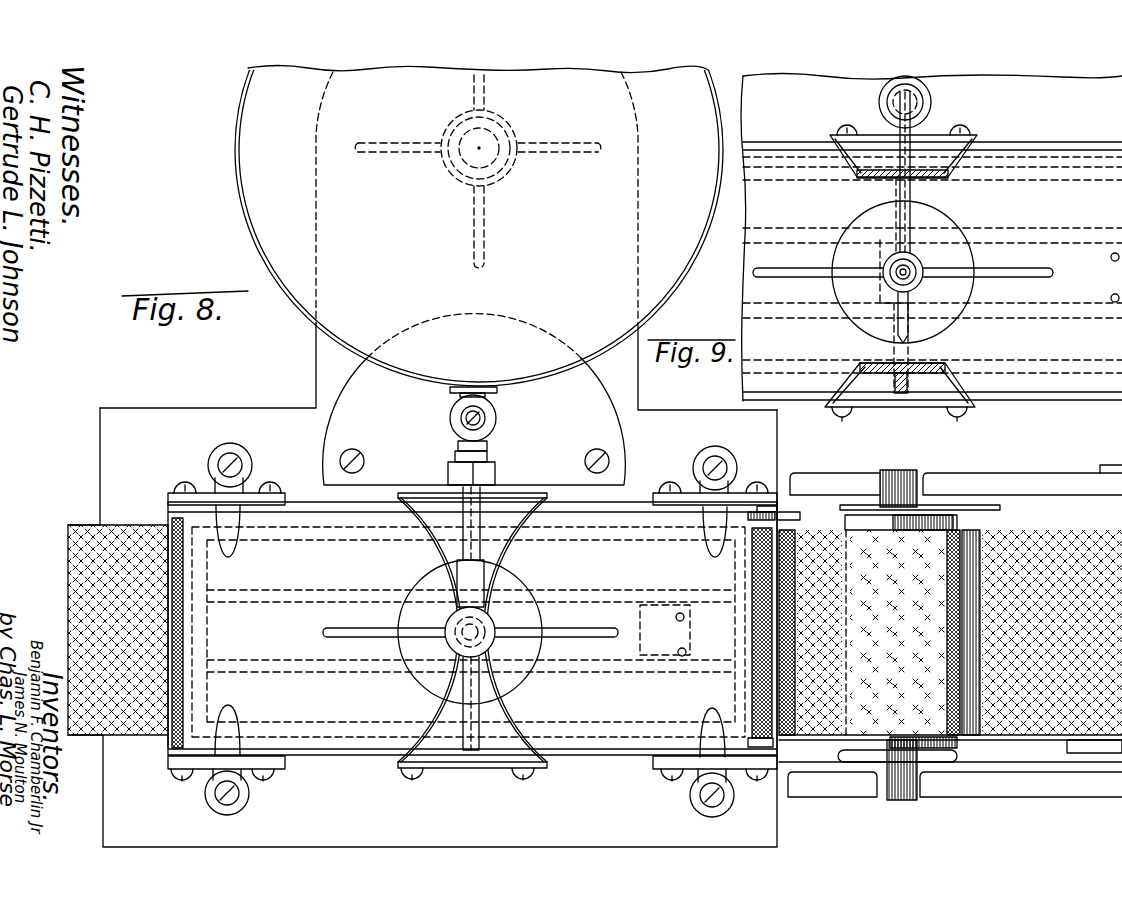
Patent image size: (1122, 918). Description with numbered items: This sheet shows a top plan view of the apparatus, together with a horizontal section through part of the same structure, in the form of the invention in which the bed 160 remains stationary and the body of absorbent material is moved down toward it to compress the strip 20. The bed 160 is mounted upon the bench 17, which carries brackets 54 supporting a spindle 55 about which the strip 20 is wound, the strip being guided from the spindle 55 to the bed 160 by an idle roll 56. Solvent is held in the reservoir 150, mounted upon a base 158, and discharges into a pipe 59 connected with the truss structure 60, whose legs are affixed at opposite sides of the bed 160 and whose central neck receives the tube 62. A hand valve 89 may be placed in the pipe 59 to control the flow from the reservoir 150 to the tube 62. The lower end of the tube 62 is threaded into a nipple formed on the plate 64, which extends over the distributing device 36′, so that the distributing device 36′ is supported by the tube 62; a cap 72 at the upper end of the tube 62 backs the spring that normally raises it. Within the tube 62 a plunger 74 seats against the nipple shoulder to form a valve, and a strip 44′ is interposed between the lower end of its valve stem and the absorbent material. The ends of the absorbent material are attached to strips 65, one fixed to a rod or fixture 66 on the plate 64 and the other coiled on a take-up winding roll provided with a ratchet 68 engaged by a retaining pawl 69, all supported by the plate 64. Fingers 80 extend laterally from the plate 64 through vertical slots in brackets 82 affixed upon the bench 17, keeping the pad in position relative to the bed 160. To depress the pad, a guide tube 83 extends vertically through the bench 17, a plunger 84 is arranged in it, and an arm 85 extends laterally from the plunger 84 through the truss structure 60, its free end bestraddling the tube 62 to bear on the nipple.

In FIG. 8, the bench 17 is at (777, 838).
In FIG. 8, the strip 20 is at (142, 525).
In FIG. 8, the distributing device 36′ is at (298, 548).
In FIG. 8, the strip 44′ is at (640, 620).
In FIG. 9, the strip 44′ is at (1072, 256).
In FIG. 8, the brackets 54 is at (1000, 478).
In FIG. 8, the spindle 55 is at (1105, 470).
In FIG. 8, the idle roll 56 is at (958, 522).
In FIG. 8, the pipe 59 is at (483, 549).
In FIG. 8, the truss structure 60 is at (437, 712).
In FIG. 9, the truss structure 60 is at (963, 170).
In FIG. 9, the tube 62 is at (915, 282).
In FIG. 8, the plate 64 is at (293, 520).
In FIG. 8, the strips 65 is at (185, 631).
In FIG. 8, the rod or fixture 66 is at (173, 740).
In FIG. 8, the ratchet 68 is at (778, 514).
In FIG. 8, the retaining pawl 69 is at (766, 500).
In FIG. 8, the cap 72 is at (447, 627).
In FIG. 9, the plunger 74 is at (889, 268).
In FIG. 8, the fingers 80 is at (234, 488).
In FIG. 8, the brackets 82 is at (212, 490).
In FIG. 9, the guide or tube 83 is at (880, 97).
In FIG. 9, the plunger 84 is at (920, 120).
In FIG. 9, the arm 85 is at (896, 188).
In FIG. 8, the hand valve 89 is at (497, 418).
In FIG. 8, the reservoir 150 is at (240, 147).
In FIG. 8, the base 158 is at (640, 148).
In FIG. 8, the bed 160 is at (596, 762).
In FIG. 9, the bed 160 is at (1071, 400).